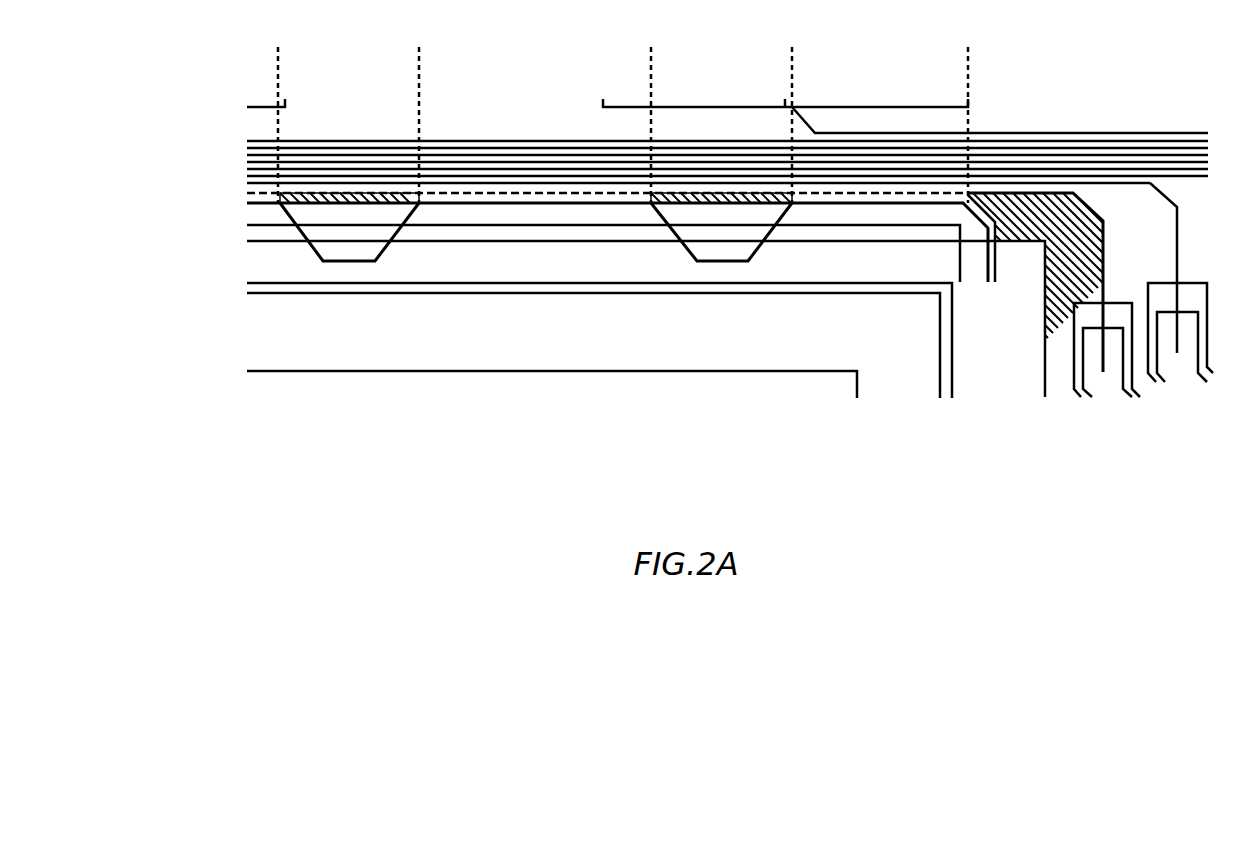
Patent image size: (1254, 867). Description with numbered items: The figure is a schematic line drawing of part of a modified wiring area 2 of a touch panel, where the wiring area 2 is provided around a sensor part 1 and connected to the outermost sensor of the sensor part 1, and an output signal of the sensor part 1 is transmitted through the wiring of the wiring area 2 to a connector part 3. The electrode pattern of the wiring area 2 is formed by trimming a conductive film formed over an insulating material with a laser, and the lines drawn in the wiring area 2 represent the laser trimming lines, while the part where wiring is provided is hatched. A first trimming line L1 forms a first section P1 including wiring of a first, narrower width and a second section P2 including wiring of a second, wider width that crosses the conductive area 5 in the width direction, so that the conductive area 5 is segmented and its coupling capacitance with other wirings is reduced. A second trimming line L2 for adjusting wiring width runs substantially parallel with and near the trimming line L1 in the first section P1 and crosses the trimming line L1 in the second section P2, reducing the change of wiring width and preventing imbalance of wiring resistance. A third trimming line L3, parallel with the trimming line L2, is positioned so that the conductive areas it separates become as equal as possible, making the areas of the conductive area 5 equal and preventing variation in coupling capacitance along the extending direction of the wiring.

The sensor part 1 is at (950, 104).
The wiring area 2 is at (1050, 147).
The connector part 3 is at (1103, 390).
The conductive area 5 is at (553, 232).
The first trimming line L1 is at (250, 192).
The second trimming line L2 is at (256, 205).
The third trimming line L3 is at (252, 228).
The first section P1 is at (740, 123).
The second section P2 is at (535, 123).